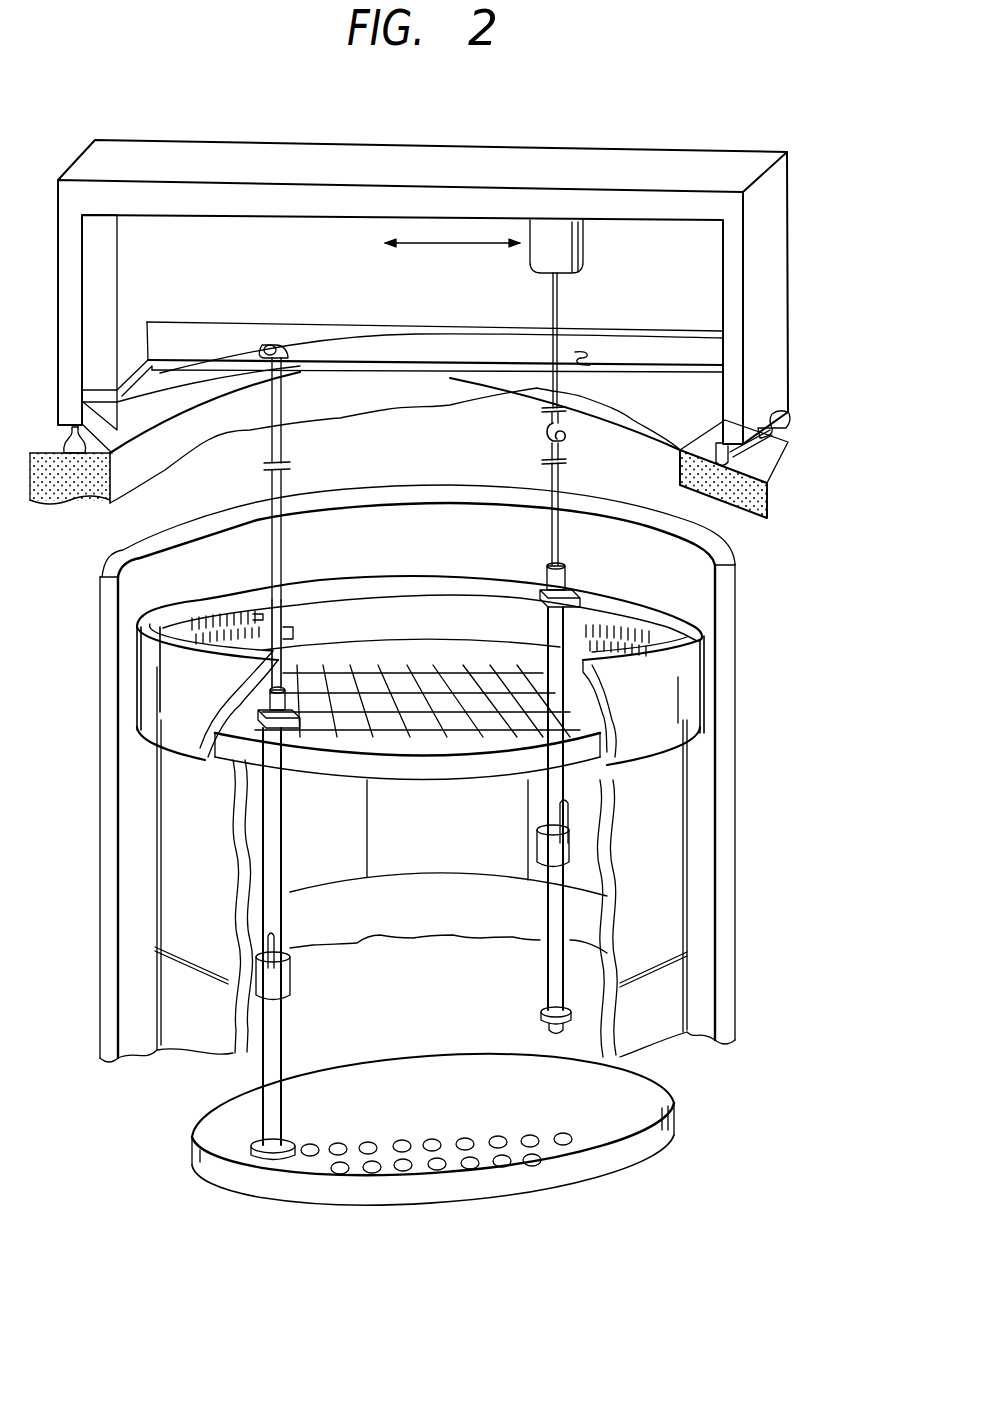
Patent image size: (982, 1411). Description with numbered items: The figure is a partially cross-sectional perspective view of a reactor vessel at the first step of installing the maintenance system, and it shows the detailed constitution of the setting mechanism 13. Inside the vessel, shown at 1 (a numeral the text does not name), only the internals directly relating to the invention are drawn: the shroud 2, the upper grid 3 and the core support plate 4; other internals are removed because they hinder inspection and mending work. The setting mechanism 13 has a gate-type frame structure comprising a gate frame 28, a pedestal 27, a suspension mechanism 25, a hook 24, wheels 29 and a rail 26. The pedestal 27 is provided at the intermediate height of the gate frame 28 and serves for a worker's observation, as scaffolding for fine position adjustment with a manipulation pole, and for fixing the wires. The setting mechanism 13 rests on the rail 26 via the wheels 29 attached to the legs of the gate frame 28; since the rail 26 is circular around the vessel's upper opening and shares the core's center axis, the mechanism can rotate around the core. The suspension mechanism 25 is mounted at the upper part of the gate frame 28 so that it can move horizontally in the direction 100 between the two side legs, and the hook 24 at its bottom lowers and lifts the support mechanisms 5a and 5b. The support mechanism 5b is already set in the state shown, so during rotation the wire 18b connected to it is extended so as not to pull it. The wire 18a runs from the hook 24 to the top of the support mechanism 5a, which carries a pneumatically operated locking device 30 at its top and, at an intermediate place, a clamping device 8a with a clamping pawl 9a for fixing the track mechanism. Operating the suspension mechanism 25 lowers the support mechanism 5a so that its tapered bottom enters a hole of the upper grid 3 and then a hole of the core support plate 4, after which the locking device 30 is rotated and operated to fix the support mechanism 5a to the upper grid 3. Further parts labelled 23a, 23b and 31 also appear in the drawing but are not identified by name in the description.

The treatment tank 1 is at (108, 680).
The shroud 2 is at (172, 988).
The upper grid 3 is at (243, 747).
The core support plate 4 is at (197, 1153).
The support mechanism 5a is at (560, 918).
The support mechanism 5b is at (270, 850).
The clamping device 8a is at (575, 838).
The clamping pawl 9a is at (615, 786).
The setting mechanism 13 is at (272, 135).
The wire 18a is at (553, 534).
The wire 18b is at (275, 562).
The wire 23a is at (547, 536).
The wire 23b is at (287, 543).
The hook 24 is at (567, 437).
The suspension mechanism 25 is at (578, 250).
The rail 26 is at (745, 465).
The pedestal 27 is at (212, 333).
The gate frame 28 is at (775, 262).
The wheels 29 is at (790, 419).
The locking device 30 is at (577, 584).
The lower end 31 is at (540, 1026).
The direction 100 is at (452, 260).